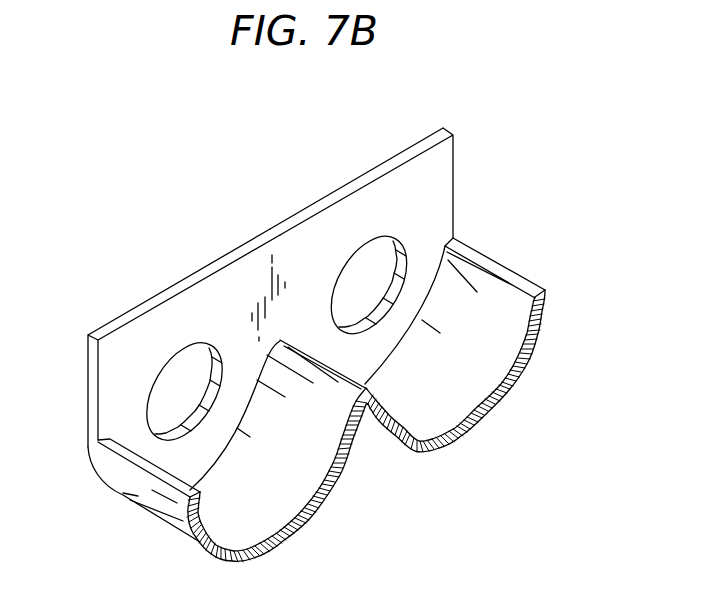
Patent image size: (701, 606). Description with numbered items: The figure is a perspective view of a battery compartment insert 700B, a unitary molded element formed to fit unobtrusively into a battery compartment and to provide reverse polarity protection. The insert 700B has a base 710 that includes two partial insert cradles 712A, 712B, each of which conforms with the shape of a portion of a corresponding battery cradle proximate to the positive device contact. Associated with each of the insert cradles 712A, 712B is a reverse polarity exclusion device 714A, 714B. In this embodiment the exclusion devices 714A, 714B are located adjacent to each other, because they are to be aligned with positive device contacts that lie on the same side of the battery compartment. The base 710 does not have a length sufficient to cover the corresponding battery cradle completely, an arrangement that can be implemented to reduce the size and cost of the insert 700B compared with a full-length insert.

The battery compartment insert 700B is at (159, 147).
The base 710 is at (505, 268).
The partial insert cradle 712A is at (273, 502).
The partial insert cradle 712B is at (440, 402).
The reverse polarity exclusion device 714A is at (118, 313).
The reverse polarity exclusion device 714B is at (408, 182).